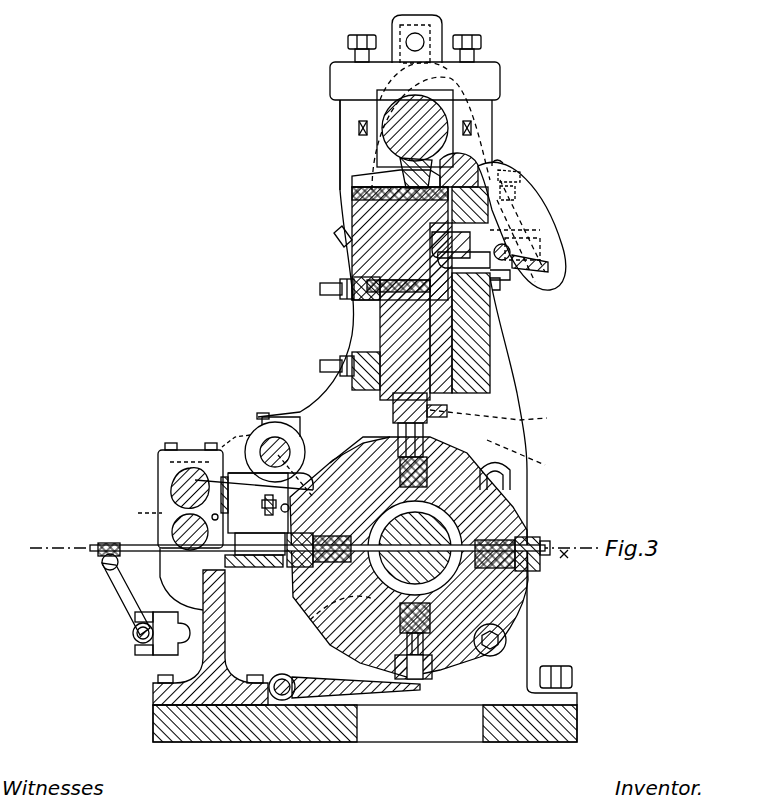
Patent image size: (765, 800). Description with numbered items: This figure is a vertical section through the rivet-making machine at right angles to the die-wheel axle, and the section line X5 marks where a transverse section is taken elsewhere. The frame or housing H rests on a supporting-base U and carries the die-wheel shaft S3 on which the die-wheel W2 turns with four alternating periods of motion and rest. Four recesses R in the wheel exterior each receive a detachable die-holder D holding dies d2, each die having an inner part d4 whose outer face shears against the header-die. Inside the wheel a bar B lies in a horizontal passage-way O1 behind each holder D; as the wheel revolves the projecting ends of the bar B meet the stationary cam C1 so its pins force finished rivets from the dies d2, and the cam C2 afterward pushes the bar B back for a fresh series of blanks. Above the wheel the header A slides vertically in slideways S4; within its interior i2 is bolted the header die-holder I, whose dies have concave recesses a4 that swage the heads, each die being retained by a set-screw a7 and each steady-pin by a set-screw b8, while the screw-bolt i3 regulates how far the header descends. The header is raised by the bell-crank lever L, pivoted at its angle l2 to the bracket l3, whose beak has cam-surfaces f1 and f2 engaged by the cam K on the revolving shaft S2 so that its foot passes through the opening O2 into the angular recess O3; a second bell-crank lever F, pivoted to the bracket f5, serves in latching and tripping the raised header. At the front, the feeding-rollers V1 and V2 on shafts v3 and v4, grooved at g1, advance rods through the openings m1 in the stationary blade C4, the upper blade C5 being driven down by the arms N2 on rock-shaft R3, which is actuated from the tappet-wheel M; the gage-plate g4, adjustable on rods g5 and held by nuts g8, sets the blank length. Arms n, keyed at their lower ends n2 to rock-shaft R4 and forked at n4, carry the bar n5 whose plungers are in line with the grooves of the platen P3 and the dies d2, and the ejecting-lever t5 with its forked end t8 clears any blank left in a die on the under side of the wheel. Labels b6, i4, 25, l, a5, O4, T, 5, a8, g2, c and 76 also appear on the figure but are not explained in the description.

The head cap pivot pin b6 is at (416, 42).
The shaft S2 is at (415, 128).
The cam K is at (405, 172).
The valve cam lug i4 is at (459, 170).
The header A is at (353, 322).
The screw-bolt i3 is at (340, 240).
The header interior i2 is at (365, 390).
The angular recess O3 is at (448, 244).
The bolt 25 is at (445, 263).
The bell-crank lever F is at (520, 147).
The cam-surface f1 is at (493, 140).
The cam-surface f2 is at (495, 172).
The bracket f5 is at (497, 198).
The bell-crank lever L is at (527, 214).
The opening O2 is at (520, 236).
The pin l is at (502, 252).
The angle of lever L l2 is at (530, 250).
The bracket l3 is at (511, 287).
The slideways S4 is at (506, 306).
The frame or housing H is at (493, 140).
The concave recess a4 is at (400, 428).
The nut a5 is at (447, 411).
The set-screw a7 is at (488, 410).
The set-screw b8 is at (526, 457).
The header die-holder I is at (395, 413).
The valve block O4 is at (427, 478).
The tappet-wheel M is at (409, 557).
The die-wheel shaft S3 is at (415, 548).
The section line X5 is at (308, 550).
The die d2 is at (290, 565).
The die-wheel W2 is at (535, 525).
The recess R is at (530, 535).
The bar B is at (411, 526).
The web T is at (460, 550).
The die-holder D is at (395, 446).
The section line 5 is at (600, 548).
The stationary cam C1 is at (530, 600).
The passage-way O1 is at (415, 627).
The inner die part d4 is at (395, 672).
The cam C2 is at (340, 640).
The rock-shaft R3 is at (272, 418).
The arm N2 is at (236, 445).
The rod a8 is at (295, 476).
The shaft v3 is at (193, 470).
The upper feeding-roller V1 is at (175, 485).
The lower feeding-roller V2 is at (174, 532).
The perimetric groove g1 is at (137, 512).
The upper shearing blade C5 is at (228, 490).
The rod g5 is at (255, 503).
The opening m1 is at (265, 505).
The gage-plate g4 is at (262, 516).
The stationary shearing blade C4 is at (262, 528).
The governor rod g2 is at (329, 485).
The nut g8 is at (295, 477).
The pin c is at (328, 546).
The shaft v4 is at (181, 579).
The bar n5 is at (160, 552).
The forked end n4 is at (105, 560).
The arm n is at (125, 598).
The rock-shaft R4 is at (132, 635).
The lower end of arm n2 is at (162, 633).
The platen P3 is at (210, 637).
The supporting-base U is at (577, 725).
The pivot 76 is at (282, 674).
The ejecting-lever t5 is at (365, 700).
The forked end t8 is at (374, 703).